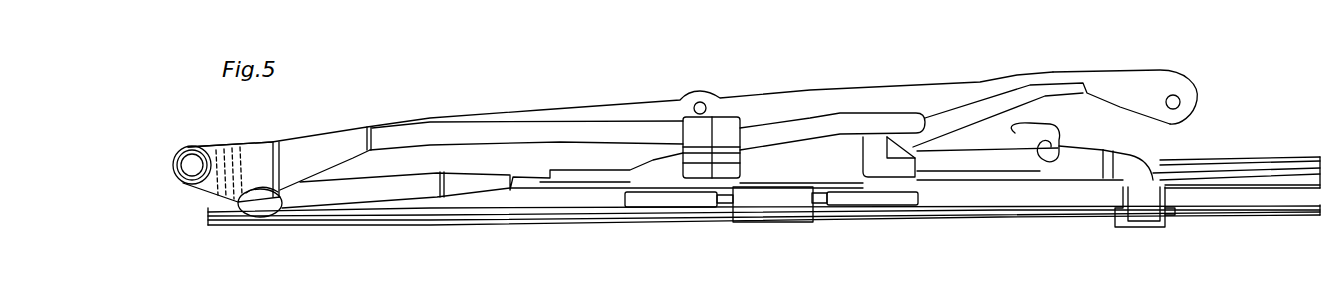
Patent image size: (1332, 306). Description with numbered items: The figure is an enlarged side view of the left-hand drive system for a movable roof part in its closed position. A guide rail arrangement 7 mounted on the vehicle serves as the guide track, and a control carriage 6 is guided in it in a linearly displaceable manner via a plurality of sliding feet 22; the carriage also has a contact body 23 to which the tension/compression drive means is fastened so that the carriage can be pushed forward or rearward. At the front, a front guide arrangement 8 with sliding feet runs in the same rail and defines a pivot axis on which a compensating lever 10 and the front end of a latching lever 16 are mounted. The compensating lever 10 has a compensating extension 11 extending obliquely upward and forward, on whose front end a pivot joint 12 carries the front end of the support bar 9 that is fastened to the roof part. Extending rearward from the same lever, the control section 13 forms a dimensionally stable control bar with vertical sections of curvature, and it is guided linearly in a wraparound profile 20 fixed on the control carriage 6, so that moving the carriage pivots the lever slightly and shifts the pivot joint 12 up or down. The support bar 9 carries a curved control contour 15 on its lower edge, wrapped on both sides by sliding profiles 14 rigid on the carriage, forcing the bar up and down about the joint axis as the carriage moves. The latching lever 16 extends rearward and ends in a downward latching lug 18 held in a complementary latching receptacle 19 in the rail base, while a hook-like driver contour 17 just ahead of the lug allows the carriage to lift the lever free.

The control carriage 6 is at (807, 177).
The guide rail arrangement 7 is at (1277, 200).
The front guide arrangement 8 is at (263, 212).
The support bar 9 is at (787, 90).
The compensating lever 10 is at (237, 112).
The compensating extension 11 is at (223, 173).
The pivot joint 12 is at (192, 170).
The control section 13 is at (313, 153).
The sliding profiles 14 is at (880, 147).
The control contour 15 is at (950, 120).
The latching lever 16 is at (390, 197).
The driver contour 17 is at (1062, 128).
The latching lug 18 is at (1167, 214).
The latching receptacle 19 is at (1148, 225).
The wraparound profile 20 is at (725, 133).
The sliding feet 22 is at (664, 205).
The contact body 23 is at (770, 218).